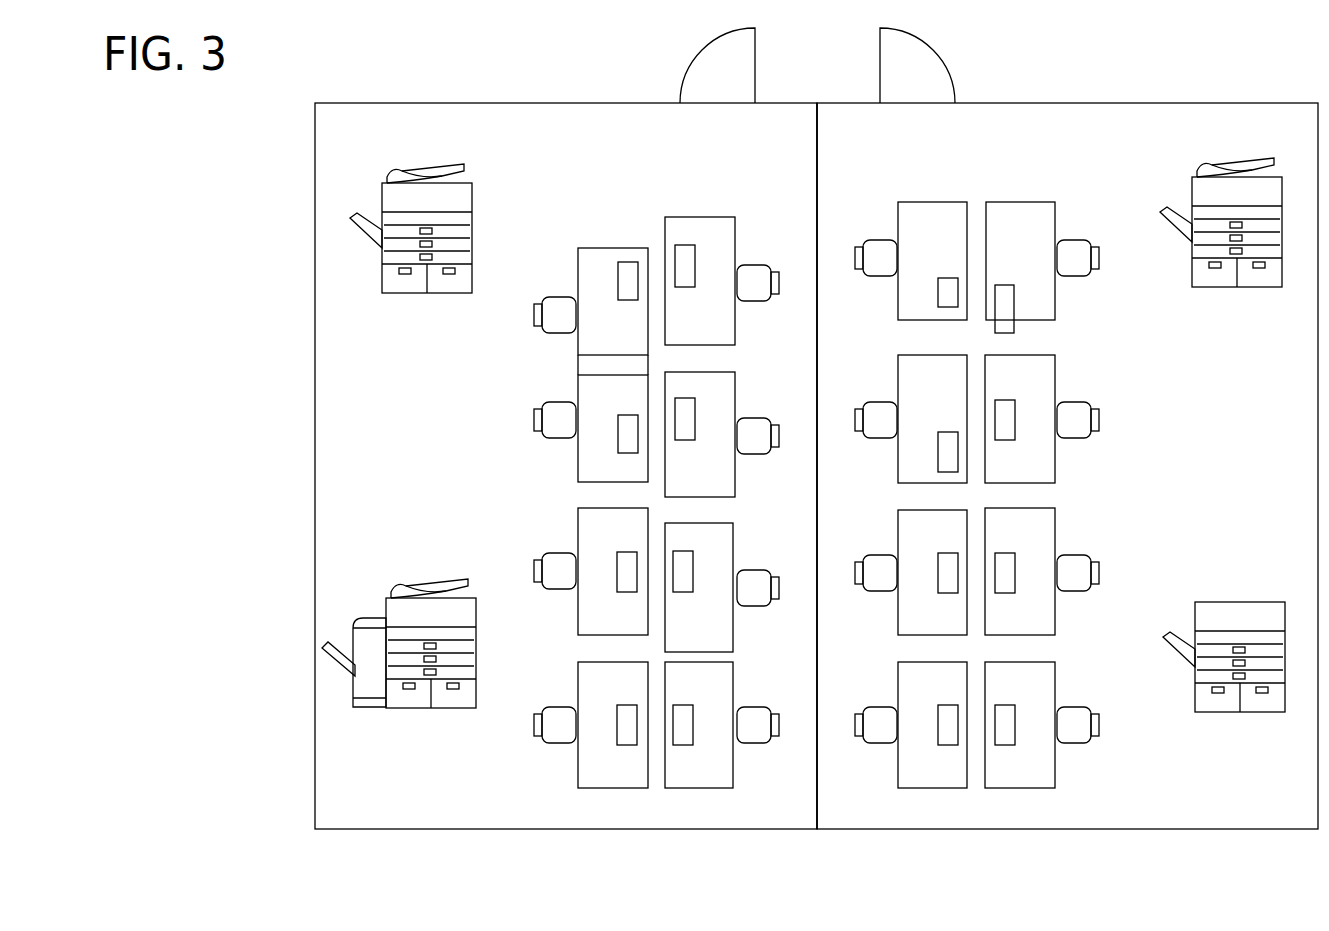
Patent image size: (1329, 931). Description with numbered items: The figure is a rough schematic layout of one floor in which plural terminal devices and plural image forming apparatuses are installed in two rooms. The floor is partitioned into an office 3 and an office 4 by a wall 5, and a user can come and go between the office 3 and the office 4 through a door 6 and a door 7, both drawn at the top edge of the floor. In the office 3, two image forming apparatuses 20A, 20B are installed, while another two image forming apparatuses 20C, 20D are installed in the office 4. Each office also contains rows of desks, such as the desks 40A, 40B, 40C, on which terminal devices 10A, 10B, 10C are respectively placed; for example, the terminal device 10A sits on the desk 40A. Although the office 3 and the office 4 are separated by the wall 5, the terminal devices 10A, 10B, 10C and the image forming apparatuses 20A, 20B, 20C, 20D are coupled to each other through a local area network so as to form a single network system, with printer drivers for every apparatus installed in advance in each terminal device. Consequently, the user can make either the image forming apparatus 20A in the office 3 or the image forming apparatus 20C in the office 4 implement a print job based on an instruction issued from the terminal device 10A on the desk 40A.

The office 3 is at (502, 103).
The office 4 is at (1198, 104).
The wall 5 is at (820, 198).
The door 6 is at (695, 62).
The door 7 is at (958, 62).
The terminal device 10A is at (1003, 430).
The terminal device 10B is at (612, 576).
The terminal device 10C is at (1003, 580).
The image forming apparatus 20A is at (431, 581).
The image forming apparatus 20B is at (427, 164).
The image forming apparatus 20C is at (1237, 163).
The image forming apparatus 20D is at (1240, 602).
The desk 40A is at (1037, 382).
The desk 40B is at (595, 527).
The desk 40C is at (1037, 535).